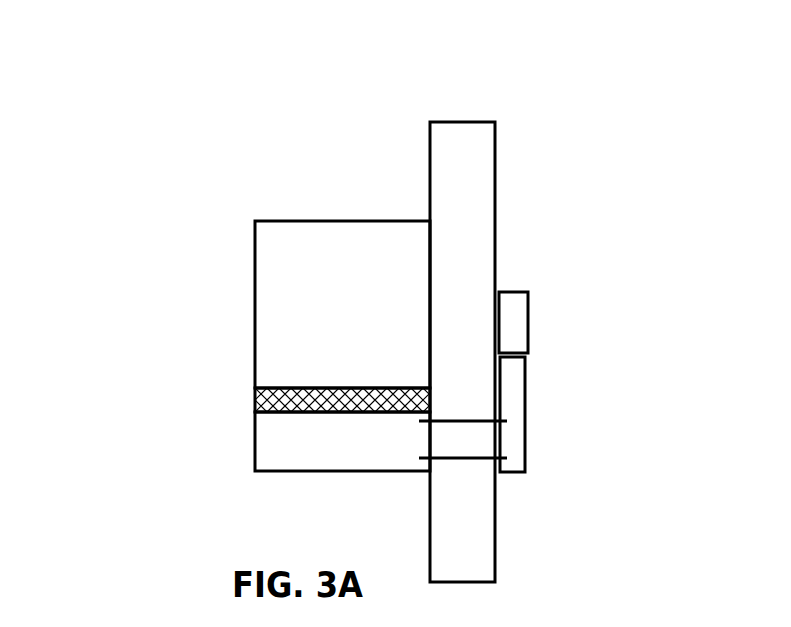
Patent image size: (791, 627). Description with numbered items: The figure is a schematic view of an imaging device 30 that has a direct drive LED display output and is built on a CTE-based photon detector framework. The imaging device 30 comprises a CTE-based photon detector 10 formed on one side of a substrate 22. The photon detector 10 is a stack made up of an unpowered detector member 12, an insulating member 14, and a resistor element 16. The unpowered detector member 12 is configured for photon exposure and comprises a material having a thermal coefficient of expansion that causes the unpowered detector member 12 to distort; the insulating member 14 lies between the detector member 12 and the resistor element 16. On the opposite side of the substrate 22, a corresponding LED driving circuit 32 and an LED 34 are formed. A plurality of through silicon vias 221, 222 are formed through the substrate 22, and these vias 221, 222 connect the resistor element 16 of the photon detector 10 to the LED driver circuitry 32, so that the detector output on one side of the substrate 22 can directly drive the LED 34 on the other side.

The imaging device 30 is at (280, 88).
The CTE-based photon detector 10 is at (162, 468).
The unpowered detector member 12 is at (255, 258).
The insulating member 14 is at (255, 398).
The resistor element 16 is at (255, 445).
The substrate 22 is at (454, 125).
The through silicon via 221 is at (472, 418).
The through silicon via 222 is at (458, 463).
The LED driving circuit 32 is at (522, 425).
The LED 34 is at (528, 315).